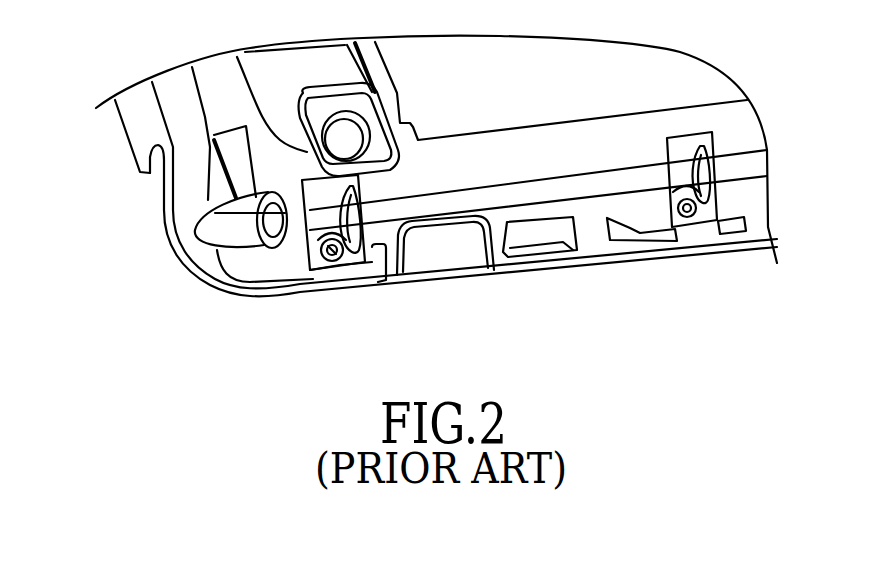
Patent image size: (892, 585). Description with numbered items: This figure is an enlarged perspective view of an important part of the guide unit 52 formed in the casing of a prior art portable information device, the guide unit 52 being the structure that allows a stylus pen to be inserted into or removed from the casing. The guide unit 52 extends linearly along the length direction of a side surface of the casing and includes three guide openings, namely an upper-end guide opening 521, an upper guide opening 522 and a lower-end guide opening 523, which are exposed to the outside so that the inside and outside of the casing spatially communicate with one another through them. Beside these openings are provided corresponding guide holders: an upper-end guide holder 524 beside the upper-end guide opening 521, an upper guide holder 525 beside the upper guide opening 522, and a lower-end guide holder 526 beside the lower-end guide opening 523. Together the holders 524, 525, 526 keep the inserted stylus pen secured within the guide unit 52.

The guide unit 52 is at (178, 263).
The upper-end guide opening 521 is at (273, 232).
The upper guide opening 522 is at (380, 262).
The lower-end guide opening 523 is at (717, 212).
The upper-end guide holder 524 is at (218, 240).
The upper guide holder 525 is at (325, 217).
The lower-end guide holder 526 is at (675, 170).